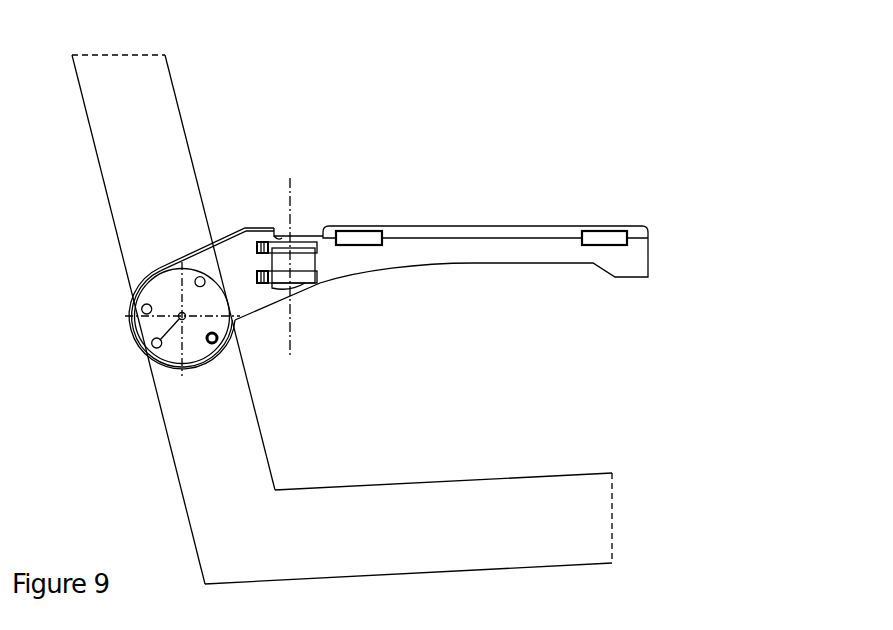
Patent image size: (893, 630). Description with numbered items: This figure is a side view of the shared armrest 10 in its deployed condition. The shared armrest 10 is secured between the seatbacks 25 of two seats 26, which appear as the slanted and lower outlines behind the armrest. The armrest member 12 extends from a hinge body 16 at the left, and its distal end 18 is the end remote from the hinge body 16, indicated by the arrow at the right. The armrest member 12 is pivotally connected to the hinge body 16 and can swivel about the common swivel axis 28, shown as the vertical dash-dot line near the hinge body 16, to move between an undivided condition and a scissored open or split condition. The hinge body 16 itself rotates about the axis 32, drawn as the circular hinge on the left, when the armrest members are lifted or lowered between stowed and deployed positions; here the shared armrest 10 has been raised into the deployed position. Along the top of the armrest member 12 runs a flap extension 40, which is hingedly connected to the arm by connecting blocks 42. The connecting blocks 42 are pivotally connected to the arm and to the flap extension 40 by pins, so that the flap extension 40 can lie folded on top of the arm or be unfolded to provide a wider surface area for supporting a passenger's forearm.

The shared armrest 10 is at (486, 117).
The armrest member 12 is at (622, 268).
The hinge body 16 is at (236, 247).
The distal end 18 is at (658, 243).
The seatback 25 is at (168, 158).
The seat 26 is at (421, 508).
The common swivel axis 28 is at (290, 178).
The axis 32 is at (153, 344).
The flap extension 40 is at (553, 227).
The connecting block 42 is at (354, 238).